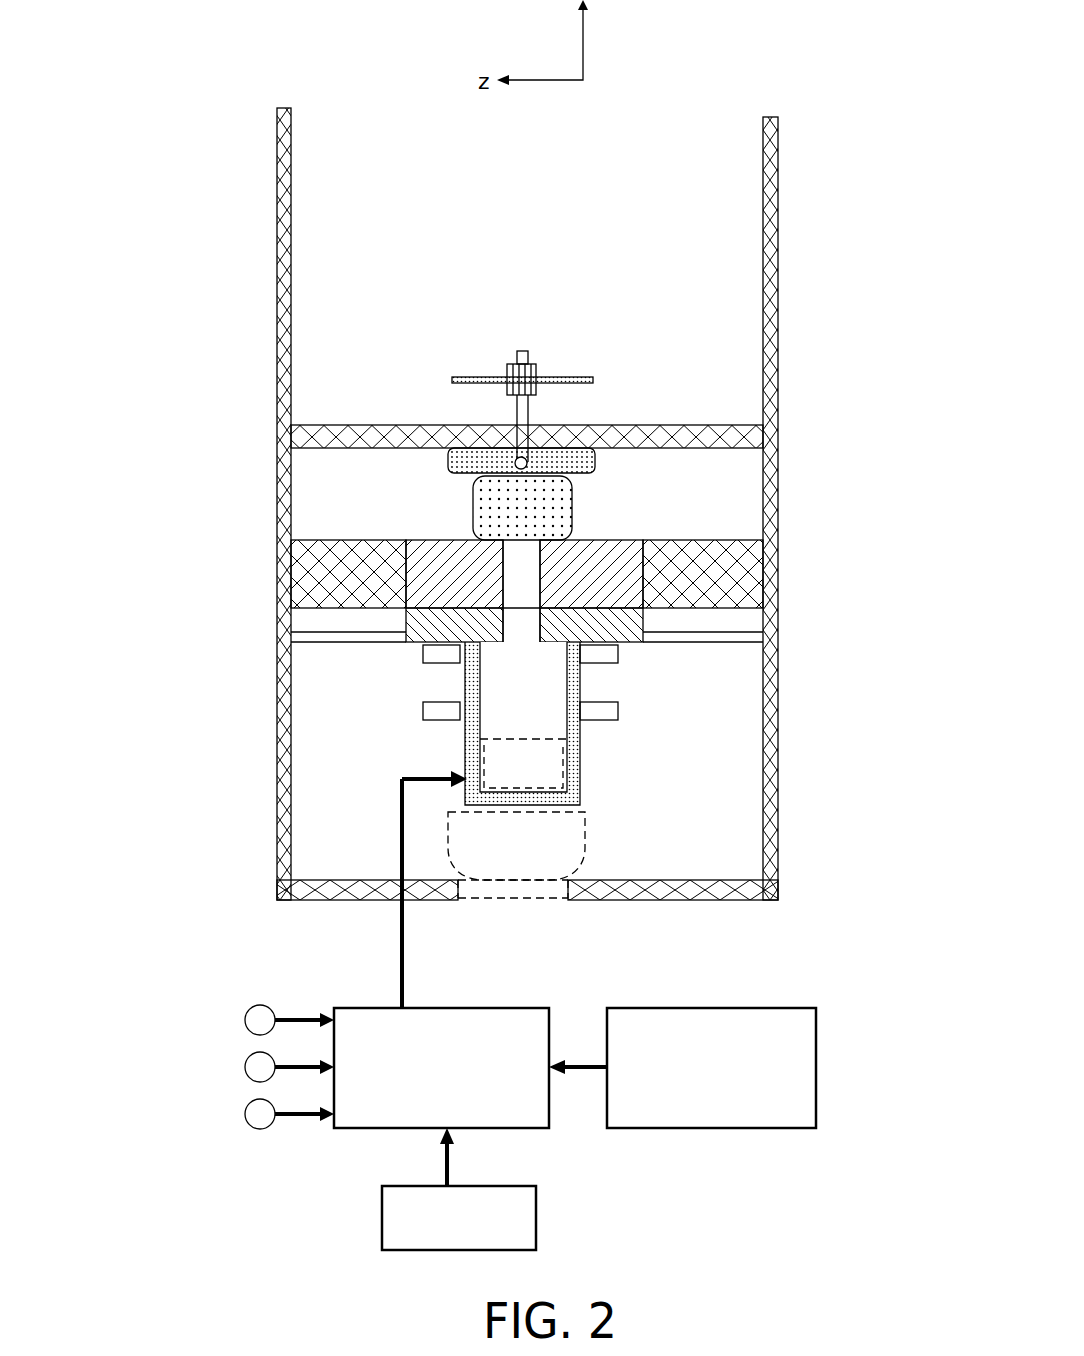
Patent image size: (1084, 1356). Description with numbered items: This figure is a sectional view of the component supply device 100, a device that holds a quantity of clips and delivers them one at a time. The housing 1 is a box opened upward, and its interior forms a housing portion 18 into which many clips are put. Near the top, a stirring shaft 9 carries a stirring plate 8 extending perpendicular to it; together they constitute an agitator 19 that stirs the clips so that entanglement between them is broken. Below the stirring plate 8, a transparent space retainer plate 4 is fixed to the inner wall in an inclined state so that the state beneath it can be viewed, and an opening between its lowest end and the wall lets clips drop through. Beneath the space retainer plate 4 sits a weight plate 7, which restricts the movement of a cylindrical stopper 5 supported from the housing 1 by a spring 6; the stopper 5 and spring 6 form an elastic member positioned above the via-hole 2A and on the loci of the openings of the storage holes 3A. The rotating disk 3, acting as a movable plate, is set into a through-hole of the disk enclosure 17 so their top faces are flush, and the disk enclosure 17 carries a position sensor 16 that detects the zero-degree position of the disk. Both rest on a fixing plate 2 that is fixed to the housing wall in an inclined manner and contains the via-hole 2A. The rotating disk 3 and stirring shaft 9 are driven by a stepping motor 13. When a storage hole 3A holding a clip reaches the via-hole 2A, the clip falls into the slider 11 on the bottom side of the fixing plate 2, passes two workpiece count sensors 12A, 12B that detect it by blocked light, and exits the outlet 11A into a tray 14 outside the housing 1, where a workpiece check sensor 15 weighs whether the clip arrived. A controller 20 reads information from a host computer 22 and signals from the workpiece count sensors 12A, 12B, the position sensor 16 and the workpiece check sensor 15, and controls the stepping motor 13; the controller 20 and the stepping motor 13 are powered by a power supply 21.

The component supply device 100 is at (788, 68).
The housing 1 is at (779, 160).
The housing portion 18 is at (547, 247).
The agitator 19 is at (622, 352).
The stirring plate 8 is at (452, 380).
The stirring shaft 9 is at (520, 410).
The space retainer plate 4 is at (708, 430).
The weight plate 7 is at (458, 466).
The spring 6 is at (527, 465).
The stopper 5 is at (550, 516).
The rotating disk 3 is at (440, 574).
The storage hole 3A is at (527, 584).
The disk enclosure 17 is at (742, 592).
The via-hole 2A is at (545, 616).
The fixing plate 2 is at (418, 614).
The slider 11 is at (553, 721).
The outlet 11A is at (520, 762).
The stepping motor 13 is at (578, 772).
The workpiece count sensor 12A is at (438, 657).
The workpiece count sensor 12B is at (438, 712).
The tray 14 is at (572, 838).
The workpiece check sensor 15 is at (512, 895).
The position sensor 16 is at (249, 1105).
The controller 20 is at (513, 1006).
The host computer 22 is at (818, 1018).
The power supply 21 is at (538, 1208).